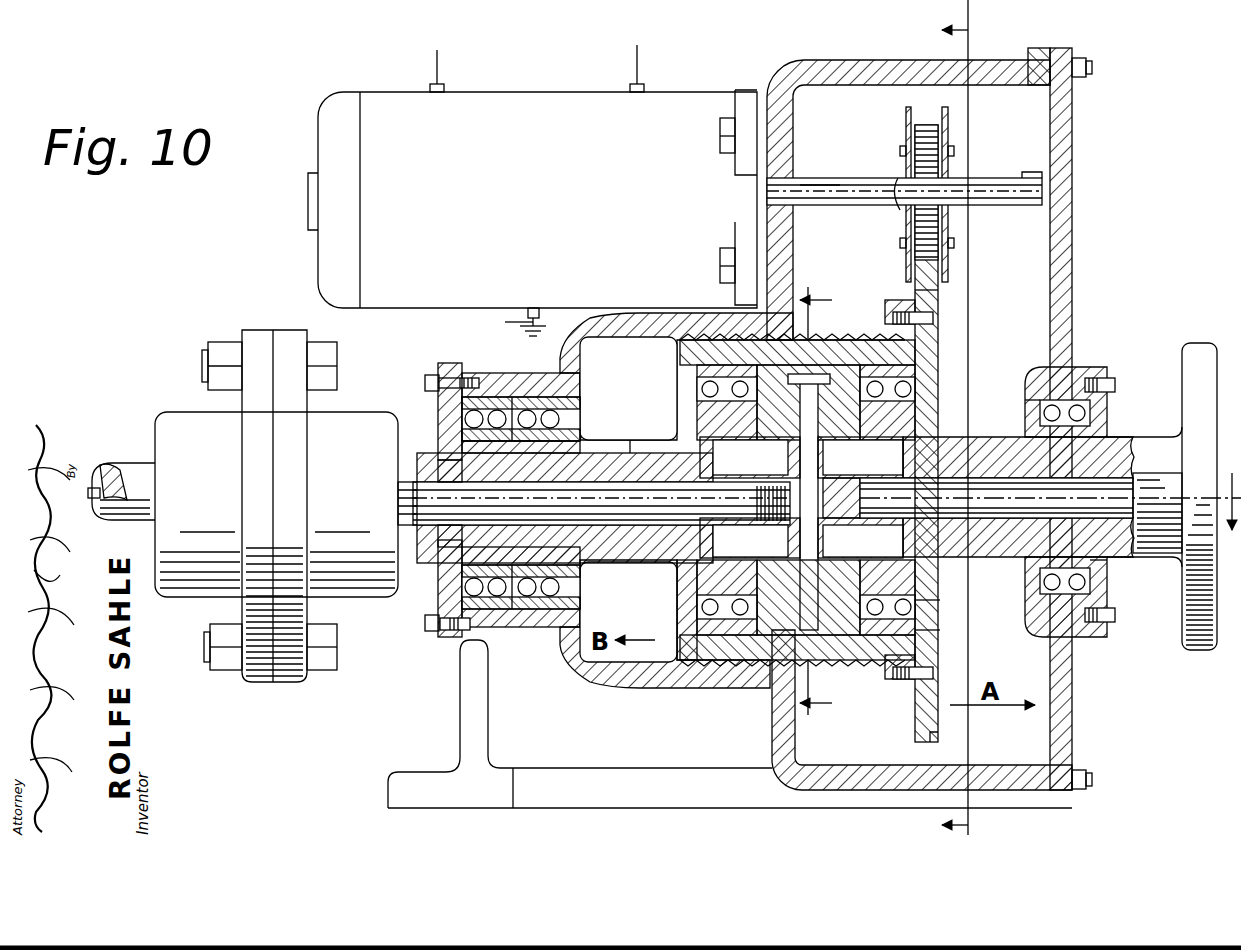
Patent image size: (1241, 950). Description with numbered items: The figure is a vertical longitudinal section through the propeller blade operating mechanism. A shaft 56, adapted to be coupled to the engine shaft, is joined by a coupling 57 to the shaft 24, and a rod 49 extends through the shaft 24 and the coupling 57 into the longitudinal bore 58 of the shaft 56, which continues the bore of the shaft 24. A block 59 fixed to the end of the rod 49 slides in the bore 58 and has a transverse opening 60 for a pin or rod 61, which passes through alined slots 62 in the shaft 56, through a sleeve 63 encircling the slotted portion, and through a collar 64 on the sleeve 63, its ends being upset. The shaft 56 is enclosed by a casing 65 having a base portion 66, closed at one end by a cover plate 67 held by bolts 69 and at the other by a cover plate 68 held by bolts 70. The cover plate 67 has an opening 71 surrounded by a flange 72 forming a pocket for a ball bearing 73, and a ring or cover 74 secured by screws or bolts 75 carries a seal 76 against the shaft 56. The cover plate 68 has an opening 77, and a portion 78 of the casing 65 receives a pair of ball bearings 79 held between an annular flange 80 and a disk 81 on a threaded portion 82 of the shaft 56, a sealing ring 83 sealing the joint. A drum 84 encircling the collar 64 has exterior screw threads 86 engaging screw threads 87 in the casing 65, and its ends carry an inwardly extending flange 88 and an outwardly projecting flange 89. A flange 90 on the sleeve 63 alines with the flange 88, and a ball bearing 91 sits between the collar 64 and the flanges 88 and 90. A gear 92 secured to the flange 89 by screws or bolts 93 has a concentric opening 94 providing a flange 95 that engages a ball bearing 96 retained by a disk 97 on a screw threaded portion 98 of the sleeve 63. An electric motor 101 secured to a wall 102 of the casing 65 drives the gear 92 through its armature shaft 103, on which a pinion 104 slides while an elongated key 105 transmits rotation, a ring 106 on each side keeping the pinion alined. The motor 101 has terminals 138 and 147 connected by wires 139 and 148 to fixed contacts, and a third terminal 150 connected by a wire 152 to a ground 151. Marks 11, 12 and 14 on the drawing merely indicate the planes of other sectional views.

The section line 11- 11 is at (969, 428).
The section line 12- 12 is at (813, 500).
The locking pin 14 is at (625, 430).
The shaft 24 is at (137, 462).
The rod 49 is at (100, 470).
The shaft 56 is at (1143, 440).
The coupling 57 is at (276, 506).
The longitudinal bore 58 is at (632, 525).
The block 59 is at (715, 450).
The transverse opening 60 is at (830, 495).
The pin or rod 61 is at (820, 540).
The alined slots 62 is at (705, 470).
The sleeve 63 is at (760, 520).
The collar 64 is at (760, 665).
The casing 65 is at (608, 688).
The base portion 66 is at (420, 782).
The cover plate 67 is at (1073, 120).
The cover plate 68 is at (448, 372).
The bolts 69 is at (1092, 66).
The bolts 70 is at (440, 372).
The opening 71 is at (1045, 390).
The flange 72 is at (1028, 395).
The ball bearing 73 is at (1040, 413).
The ring or cover 74 is at (1090, 590).
The screws or bolts 75 is at (1115, 615).
The seal 76 is at (1107, 570).
The opening 77 is at (440, 598).
The portion 78 is at (525, 612).
The ball bearings 79 is at (470, 635).
The annular flange 80 is at (565, 415).
The disk 81 is at (440, 563).
The threaded portion 82 is at (440, 468).
The sealing ring 83 is at (465, 428).
The drum 84 is at (862, 300).
The screw threads 86 is at (858, 340).
The screw threads 87 is at (705, 340).
The inwardly extending flange 88 is at (700, 622).
The outwardly projecting flange 89 is at (912, 680).
The outwardly projecting flange 90 is at (700, 388).
The ball bearing 91 is at (697, 604).
The gear 92 is at (930, 302).
The screws or bolts 93 is at (934, 318).
The opening 94 is at (935, 600).
The flange 95 is at (940, 610).
The ball bearing 96 is at (940, 630).
The disk 97 is at (930, 400).
The screw threaded portion 98 is at (932, 560).
The electric motor 101 is at (532, 200).
The wall 102 is at (772, 85).
The shaft 103 is at (825, 192).
The pinion 104 is at (935, 175).
The elongated key 105 is at (853, 186).
The ring 106 is at (905, 120).
The terminal 138 is at (644, 86).
The wire 139 is at (637, 50).
The terminal 147 is at (445, 86).
The wire 148 is at (436, 60).
The third terminal 150 is at (533, 308).
The ground 151 is at (530, 336).
The wire 152 is at (505, 322).